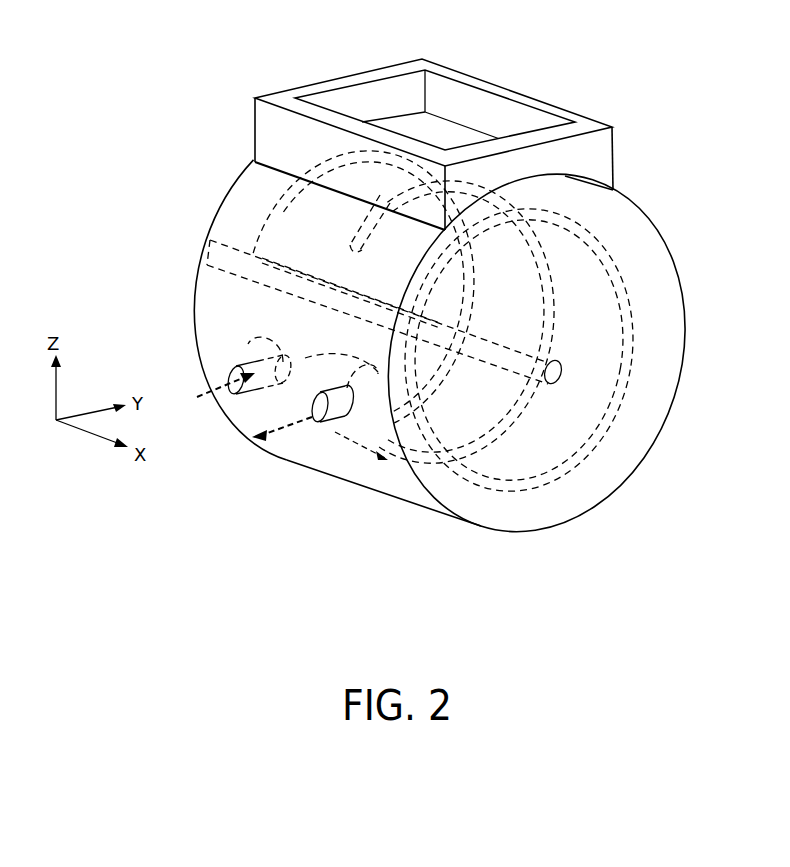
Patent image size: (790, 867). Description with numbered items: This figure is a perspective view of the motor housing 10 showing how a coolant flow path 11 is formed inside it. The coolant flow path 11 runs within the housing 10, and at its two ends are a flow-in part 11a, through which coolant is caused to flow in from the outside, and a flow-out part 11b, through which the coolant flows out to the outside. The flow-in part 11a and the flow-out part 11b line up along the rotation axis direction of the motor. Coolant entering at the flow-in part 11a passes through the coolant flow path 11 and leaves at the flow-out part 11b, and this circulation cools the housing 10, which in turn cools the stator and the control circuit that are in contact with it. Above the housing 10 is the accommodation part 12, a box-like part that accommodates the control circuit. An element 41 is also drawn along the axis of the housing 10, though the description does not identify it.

The housing 10 is at (210, 228).
The coolant flow path 11 is at (283, 207).
The flow-in part 11a is at (247, 393).
The flow-out part 11b is at (320, 420).
The accommodation part 12 is at (377, 105).
The shaft 41 is at (237, 275).